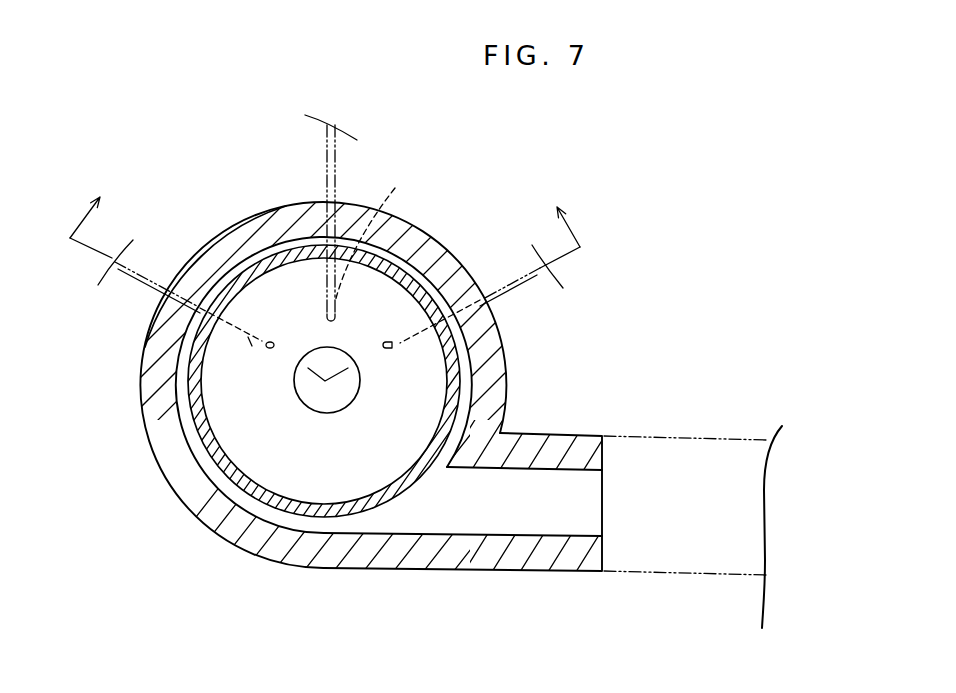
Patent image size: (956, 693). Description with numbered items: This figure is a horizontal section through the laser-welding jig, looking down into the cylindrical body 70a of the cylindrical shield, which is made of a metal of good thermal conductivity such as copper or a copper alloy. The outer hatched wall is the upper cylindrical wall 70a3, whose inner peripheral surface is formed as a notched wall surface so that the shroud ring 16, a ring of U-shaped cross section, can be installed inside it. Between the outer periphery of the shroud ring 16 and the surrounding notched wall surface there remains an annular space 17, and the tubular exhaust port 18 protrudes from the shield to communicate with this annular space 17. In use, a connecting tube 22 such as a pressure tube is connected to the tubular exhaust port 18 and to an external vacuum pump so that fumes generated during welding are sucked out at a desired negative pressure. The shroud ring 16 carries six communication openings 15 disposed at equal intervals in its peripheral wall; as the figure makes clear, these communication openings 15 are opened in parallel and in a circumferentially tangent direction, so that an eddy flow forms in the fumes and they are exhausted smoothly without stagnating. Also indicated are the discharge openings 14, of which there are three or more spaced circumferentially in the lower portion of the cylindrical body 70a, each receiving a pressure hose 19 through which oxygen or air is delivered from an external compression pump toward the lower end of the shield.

The discharge opening 14 is at (113, 362).
The communication opening 15 is at (268, 266).
The shroud ring 16 is at (285, 483).
The annular space 17 is at (188, 425).
The tubular exhaust port 18 is at (445, 572).
The pressure hose 19 is at (337, 172).
The connecting tube 22 is at (682, 576).
The cylindrical body 70a is at (441, 234).
The upper cylindrical wall 70a3 is at (463, 263).